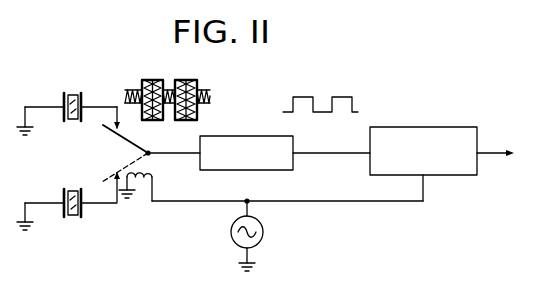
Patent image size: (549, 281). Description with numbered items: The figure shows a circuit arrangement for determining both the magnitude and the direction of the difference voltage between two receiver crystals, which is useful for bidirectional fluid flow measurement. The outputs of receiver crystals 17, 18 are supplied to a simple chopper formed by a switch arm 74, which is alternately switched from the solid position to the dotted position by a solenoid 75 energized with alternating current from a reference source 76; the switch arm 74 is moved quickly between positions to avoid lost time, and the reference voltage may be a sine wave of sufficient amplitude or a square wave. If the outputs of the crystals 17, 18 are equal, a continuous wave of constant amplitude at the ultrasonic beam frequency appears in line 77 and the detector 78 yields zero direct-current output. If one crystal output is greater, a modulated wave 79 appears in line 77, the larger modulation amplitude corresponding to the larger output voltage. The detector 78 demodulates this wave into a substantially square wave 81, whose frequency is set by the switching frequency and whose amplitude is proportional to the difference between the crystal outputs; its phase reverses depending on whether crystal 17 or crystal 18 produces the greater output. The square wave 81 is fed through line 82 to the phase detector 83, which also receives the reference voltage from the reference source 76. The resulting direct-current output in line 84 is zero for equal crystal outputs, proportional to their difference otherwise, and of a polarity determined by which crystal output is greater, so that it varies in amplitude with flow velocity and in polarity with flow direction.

The receiver crystal 17 is at (71, 96).
The receiver crystal 18 is at (72, 193).
The switch arm 74 is at (133, 144).
The solenoid 75 is at (146, 169).
The reference source 76 is at (231, 232).
The line 77 is at (172, 153).
The detector 78 is at (250, 136).
The modulated wave 79 is at (152, 80).
The square wave 81 is at (333, 97).
The line 82 is at (342, 140).
The phase detector 83 is at (435, 127).
The line 84 is at (495, 156).